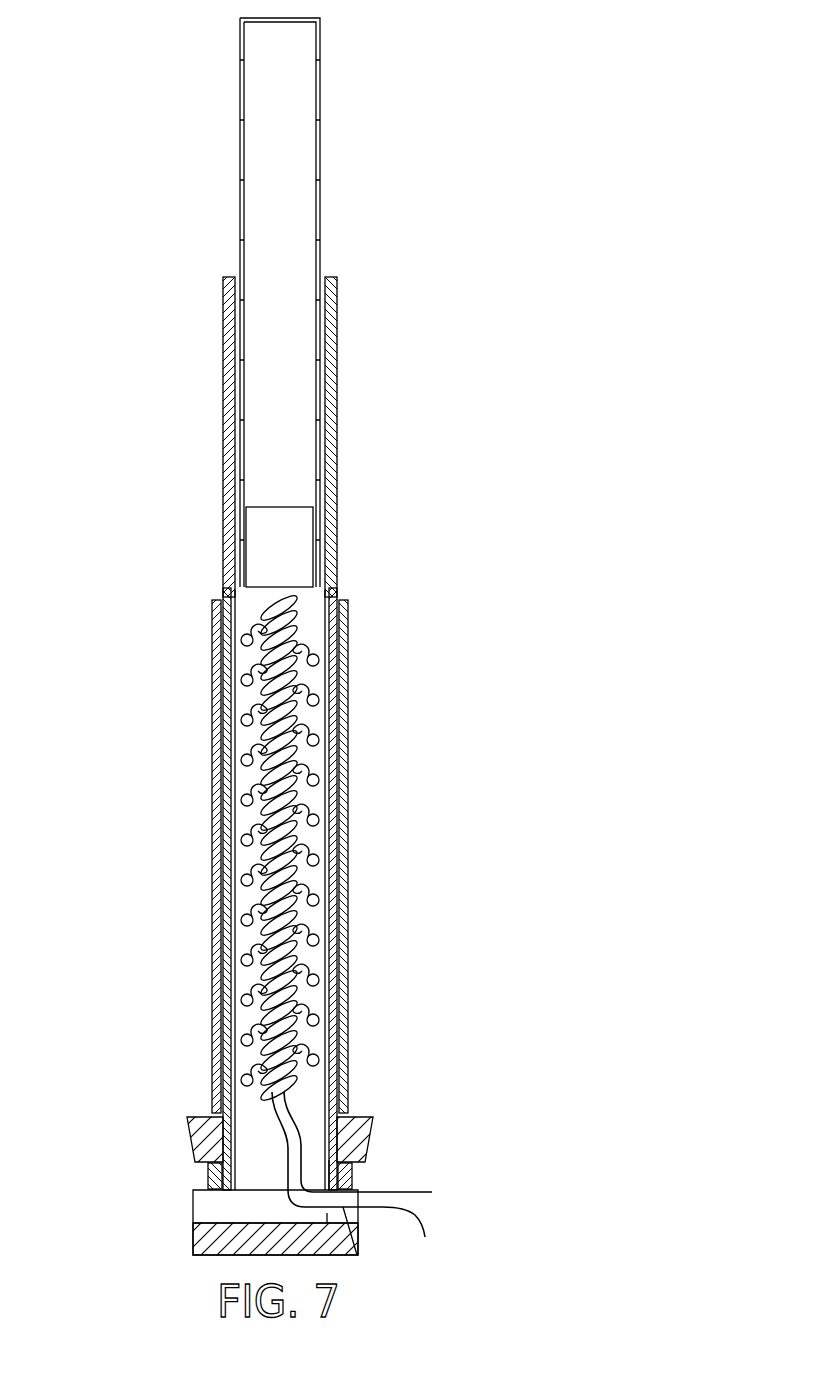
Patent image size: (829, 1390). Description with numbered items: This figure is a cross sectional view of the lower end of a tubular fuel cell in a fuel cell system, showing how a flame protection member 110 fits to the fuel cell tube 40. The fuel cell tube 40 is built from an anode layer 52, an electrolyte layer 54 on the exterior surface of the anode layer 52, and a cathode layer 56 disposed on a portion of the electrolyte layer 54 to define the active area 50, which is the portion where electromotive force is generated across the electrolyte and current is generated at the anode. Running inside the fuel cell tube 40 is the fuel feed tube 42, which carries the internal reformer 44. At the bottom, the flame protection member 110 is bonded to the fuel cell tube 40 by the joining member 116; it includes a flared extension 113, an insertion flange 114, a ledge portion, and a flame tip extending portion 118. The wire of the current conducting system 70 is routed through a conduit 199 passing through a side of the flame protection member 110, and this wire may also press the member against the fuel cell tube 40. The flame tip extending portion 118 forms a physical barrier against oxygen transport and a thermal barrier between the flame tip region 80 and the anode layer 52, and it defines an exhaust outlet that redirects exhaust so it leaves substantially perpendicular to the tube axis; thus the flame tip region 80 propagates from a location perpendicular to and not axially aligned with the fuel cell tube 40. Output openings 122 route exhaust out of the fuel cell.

The fuel feed tube 42 is at (332, 173).
The fuel cell tube 40 is at (330, 428).
The internal reformer 44 is at (278, 557).
The active area 50 is at (196, 595).
The cathode layer 56 is at (350, 962).
The electrolyte layer 54 is at (342, 1030).
The anode layer 52 is at (327, 1100).
The flame protection member 110 is at (370, 1108).
The flared extension 113 is at (373, 1117).
The joining member 116 is at (354, 1172).
The insertion flange 114 is at (196, 1170).
The output openings 122 is at (321, 1178).
The flame tip extending portion 118 is at (186, 1241).
The conduit 199 is at (355, 1243).
The current conducting system 70 is at (432, 1213).
The flame tip region 80 is at (50, 1212).